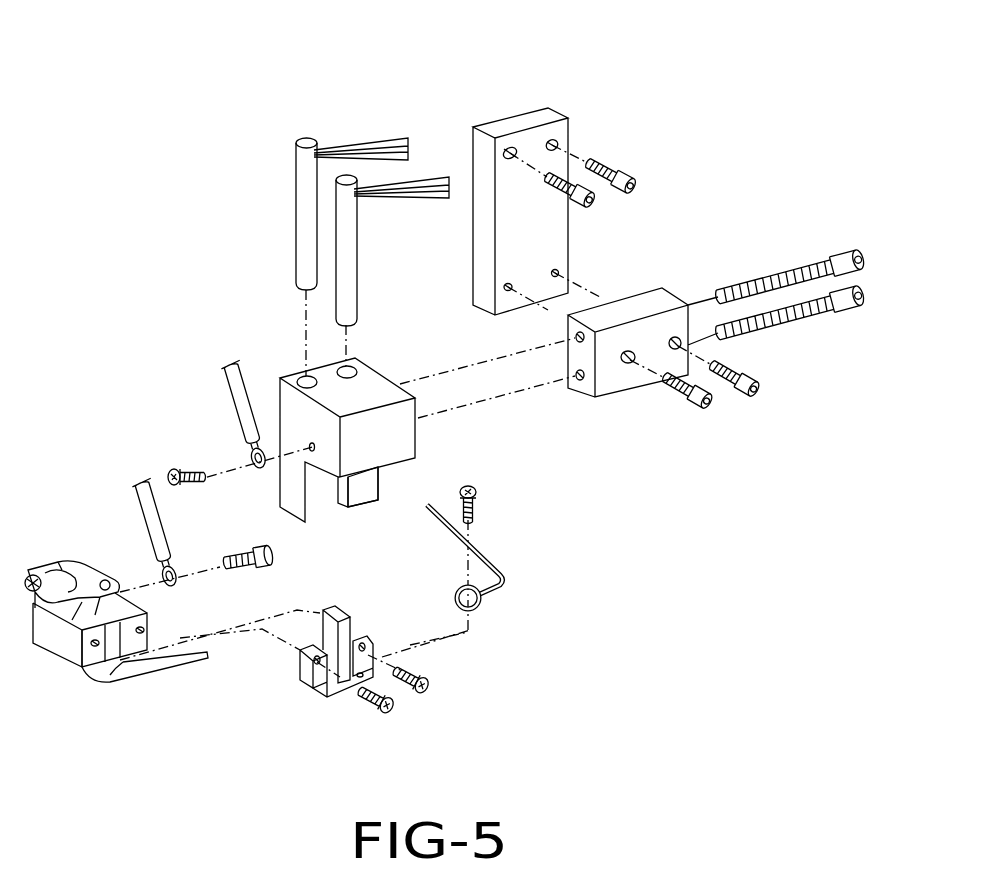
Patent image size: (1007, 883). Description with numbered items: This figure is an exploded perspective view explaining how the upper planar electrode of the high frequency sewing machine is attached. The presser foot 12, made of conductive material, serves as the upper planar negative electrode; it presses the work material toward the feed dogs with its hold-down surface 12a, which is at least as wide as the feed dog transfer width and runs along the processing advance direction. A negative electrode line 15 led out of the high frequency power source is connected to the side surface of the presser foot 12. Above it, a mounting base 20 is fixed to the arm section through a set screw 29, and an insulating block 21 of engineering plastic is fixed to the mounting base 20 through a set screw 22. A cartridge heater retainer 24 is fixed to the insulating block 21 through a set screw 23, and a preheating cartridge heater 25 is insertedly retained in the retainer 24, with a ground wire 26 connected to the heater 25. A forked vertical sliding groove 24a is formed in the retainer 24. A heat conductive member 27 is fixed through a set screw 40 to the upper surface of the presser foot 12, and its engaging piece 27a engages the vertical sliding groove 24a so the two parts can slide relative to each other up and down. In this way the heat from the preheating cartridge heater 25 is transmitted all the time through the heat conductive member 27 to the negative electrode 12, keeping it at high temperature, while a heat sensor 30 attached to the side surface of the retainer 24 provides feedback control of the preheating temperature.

The presser foot 12 is at (116, 672).
The hold-down surface 12a is at (82, 670).
The negative electrode line 15 is at (152, 513).
The mounting base 20 is at (512, 123).
The insulating block 21 is at (660, 305).
The set screw 22 is at (752, 396).
The set screw 23 is at (758, 318).
The cartridge heater retainer 24 is at (377, 387).
The vertical sliding groove 24a is at (350, 492).
The preheating cartridge heater 25 is at (342, 250).
The ground wire 26 is at (232, 388).
The heat conductive member 27 is at (341, 655).
The engaging piece 27a is at (342, 613).
The set screw 29 is at (607, 167).
The heat sensor 30 is at (498, 583).
The set screw 40 is at (420, 690).